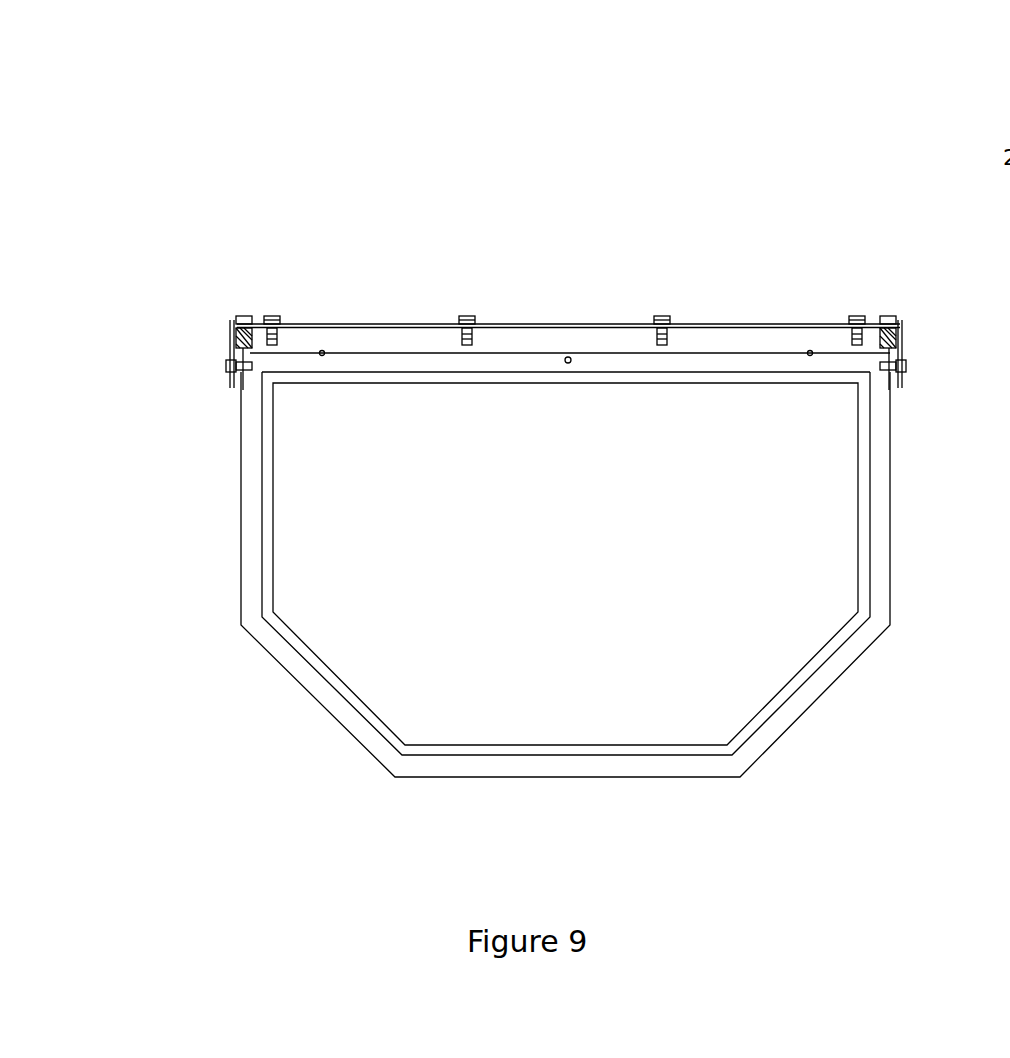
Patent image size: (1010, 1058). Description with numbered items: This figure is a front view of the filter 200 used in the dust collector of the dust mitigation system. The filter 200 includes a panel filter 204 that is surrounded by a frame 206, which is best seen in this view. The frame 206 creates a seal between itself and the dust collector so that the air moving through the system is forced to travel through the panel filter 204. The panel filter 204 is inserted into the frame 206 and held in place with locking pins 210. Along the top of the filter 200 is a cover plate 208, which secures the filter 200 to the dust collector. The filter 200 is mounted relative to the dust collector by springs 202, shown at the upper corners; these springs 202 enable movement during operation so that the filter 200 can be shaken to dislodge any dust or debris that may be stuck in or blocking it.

The filter 200 is at (297, 170).
The springs 202 is at (236, 330).
The panel filter 204 is at (580, 577).
The frame 206 is at (820, 703).
The cover plate 208 is at (790, 320).
The locking pins 210 is at (566, 357).